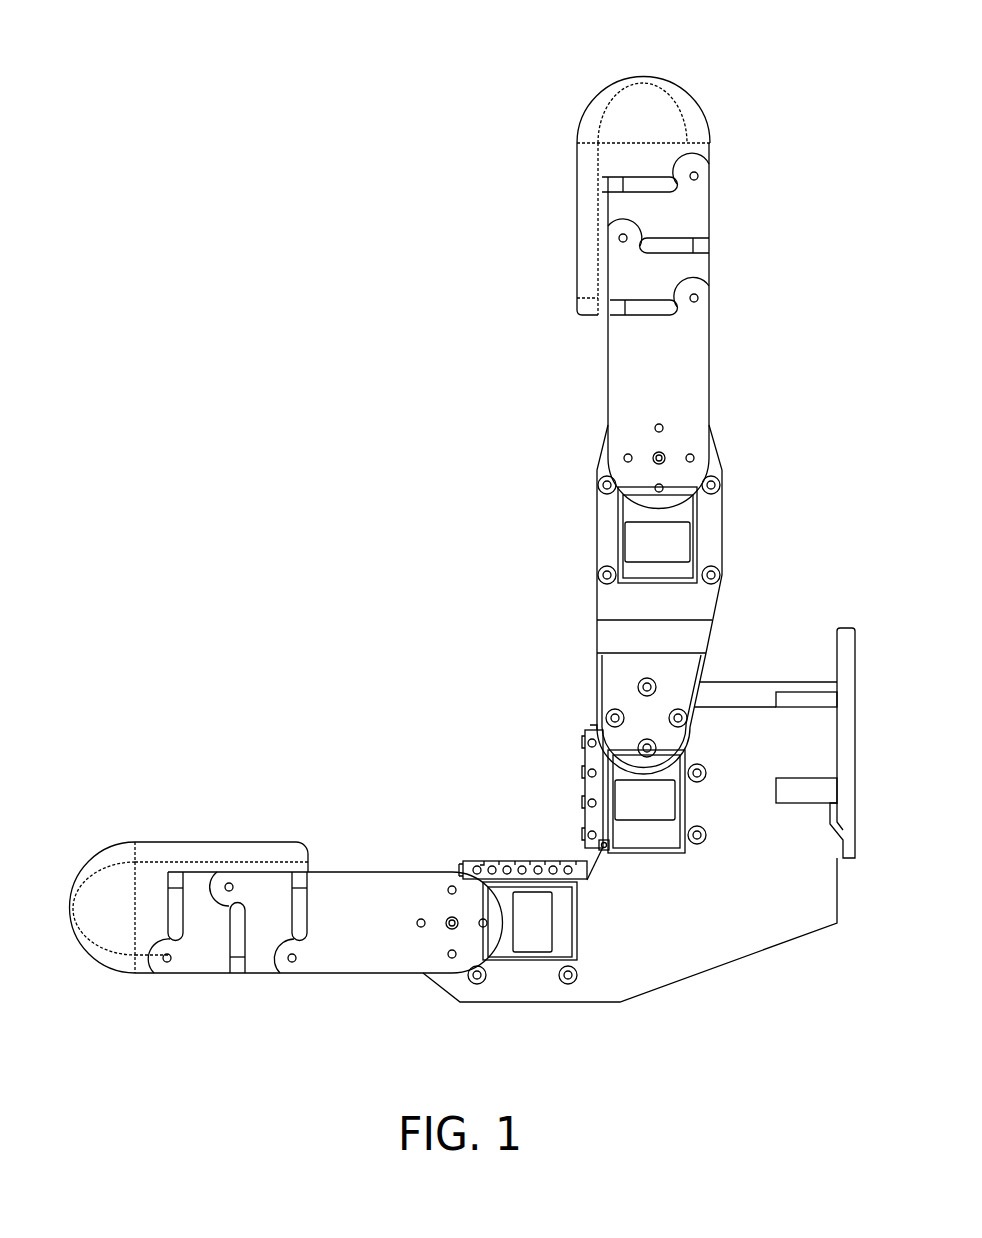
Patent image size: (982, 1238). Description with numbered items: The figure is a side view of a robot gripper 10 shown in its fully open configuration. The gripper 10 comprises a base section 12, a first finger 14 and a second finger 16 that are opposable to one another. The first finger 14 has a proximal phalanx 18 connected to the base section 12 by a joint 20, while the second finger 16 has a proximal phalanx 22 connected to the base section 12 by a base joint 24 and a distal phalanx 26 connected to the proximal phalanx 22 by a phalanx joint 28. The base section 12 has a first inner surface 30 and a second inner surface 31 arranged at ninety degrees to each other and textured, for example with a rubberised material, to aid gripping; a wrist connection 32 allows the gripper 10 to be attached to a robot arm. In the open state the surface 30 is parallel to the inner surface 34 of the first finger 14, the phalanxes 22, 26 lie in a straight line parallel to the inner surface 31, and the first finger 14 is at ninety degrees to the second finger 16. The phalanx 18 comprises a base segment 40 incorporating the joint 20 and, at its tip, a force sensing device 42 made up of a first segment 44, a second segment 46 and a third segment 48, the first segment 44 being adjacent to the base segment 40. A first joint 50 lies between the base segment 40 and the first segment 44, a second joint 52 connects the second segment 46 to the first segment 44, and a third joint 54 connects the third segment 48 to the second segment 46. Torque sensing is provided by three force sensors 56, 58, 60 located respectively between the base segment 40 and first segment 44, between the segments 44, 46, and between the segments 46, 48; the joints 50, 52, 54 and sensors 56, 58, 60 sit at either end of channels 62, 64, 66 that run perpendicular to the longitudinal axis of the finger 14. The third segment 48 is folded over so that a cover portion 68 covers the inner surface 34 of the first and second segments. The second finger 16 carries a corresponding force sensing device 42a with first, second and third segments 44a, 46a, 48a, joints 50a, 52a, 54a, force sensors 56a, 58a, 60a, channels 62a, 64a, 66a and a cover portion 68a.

The robot gripper 10 is at (778, 987).
The base section 12 is at (687, 945).
The first finger 14 is at (177, 747).
The second finger 16 is at (731, 463).
The proximal phalanx 18 is at (418, 883).
The joint 20 is at (452, 913).
The proximal phalanx 22 is at (596, 530).
The base joint 24 is at (648, 713).
The distal phalanx 26 is at (607, 392).
The phalanx joint 28 is at (668, 455).
The first inner surface 30 is at (537, 860).
The second inner surface 31 is at (582, 773).
The wrist connection 32 is at (855, 743).
The inner surface 34 is at (378, 872).
The base segment 40 is at (322, 948).
The force sensing device 42 is at (186, 936).
The force sensing device 42a is at (691, 191).
The first segment 44 is at (270, 897).
The first segment 44a is at (620, 262).
The second segment 46 is at (200, 897).
The second segment 46a is at (697, 198).
The third segment 48 is at (102, 930).
The third segment 48a is at (645, 88).
The first joint 50 is at (300, 984).
The first joint 50a is at (727, 286).
The second joint 52 is at (230, 882).
The second joint 52a is at (620, 237).
The third joint 54 is at (170, 962).
The third joint 54a is at (706, 170).
The force sensor 56 is at (302, 880).
The force sensor 56a is at (613, 310).
The force sensor 58 is at (237, 973).
The force sensor 58a is at (702, 246).
The force sensor 60 is at (175, 880).
The force sensor 60a is at (612, 182).
The channel 62 is at (292, 927).
The channel 62a is at (655, 308).
The channel 64 is at (233, 928).
The channel 64a is at (668, 226).
The channel 66 is at (175, 915).
The channel 66a is at (650, 185).
The cover portion 68 is at (280, 850).
The cover portion 68a is at (583, 257).